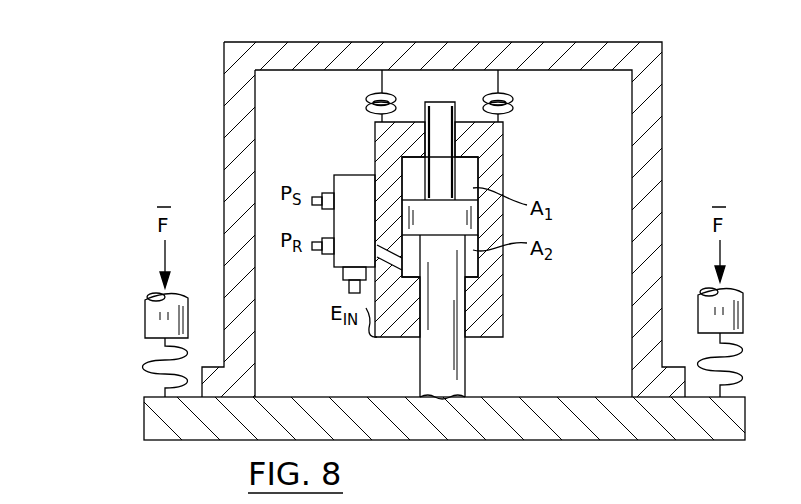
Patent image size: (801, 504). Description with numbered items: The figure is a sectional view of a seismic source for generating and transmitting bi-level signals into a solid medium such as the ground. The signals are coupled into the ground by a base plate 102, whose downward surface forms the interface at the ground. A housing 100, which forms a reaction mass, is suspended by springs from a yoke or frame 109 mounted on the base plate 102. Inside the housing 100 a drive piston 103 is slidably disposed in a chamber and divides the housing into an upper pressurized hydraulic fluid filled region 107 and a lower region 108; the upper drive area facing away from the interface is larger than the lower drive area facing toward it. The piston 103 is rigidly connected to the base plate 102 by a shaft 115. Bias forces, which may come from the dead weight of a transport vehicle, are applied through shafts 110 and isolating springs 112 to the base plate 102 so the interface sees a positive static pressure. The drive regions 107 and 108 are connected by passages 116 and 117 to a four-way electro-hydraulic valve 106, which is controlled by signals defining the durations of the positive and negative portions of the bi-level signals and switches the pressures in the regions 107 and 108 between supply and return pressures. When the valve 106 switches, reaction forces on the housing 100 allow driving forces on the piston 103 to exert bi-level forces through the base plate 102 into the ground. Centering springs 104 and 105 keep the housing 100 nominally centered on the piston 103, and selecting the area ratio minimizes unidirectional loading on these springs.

The housing 100 is at (503, 127).
The base plate 102 is at (545, 397).
The drive piston 103 is at (465, 231).
The centering spring 104 is at (513, 98).
The centering spring 105 is at (365, 98).
The four-way electro-hydraulic valve 106 is at (352, 175).
The upper drive region 107 is at (470, 177).
The lower drive region 108 is at (467, 277).
The yoke or frame 109 is at (662, 188).
The shaft 110 is at (145, 305).
The isolating spring 112 is at (148, 375).
The shaft 115 is at (465, 368).
The passage 116 is at (390, 170).
The passage 117 is at (393, 272).